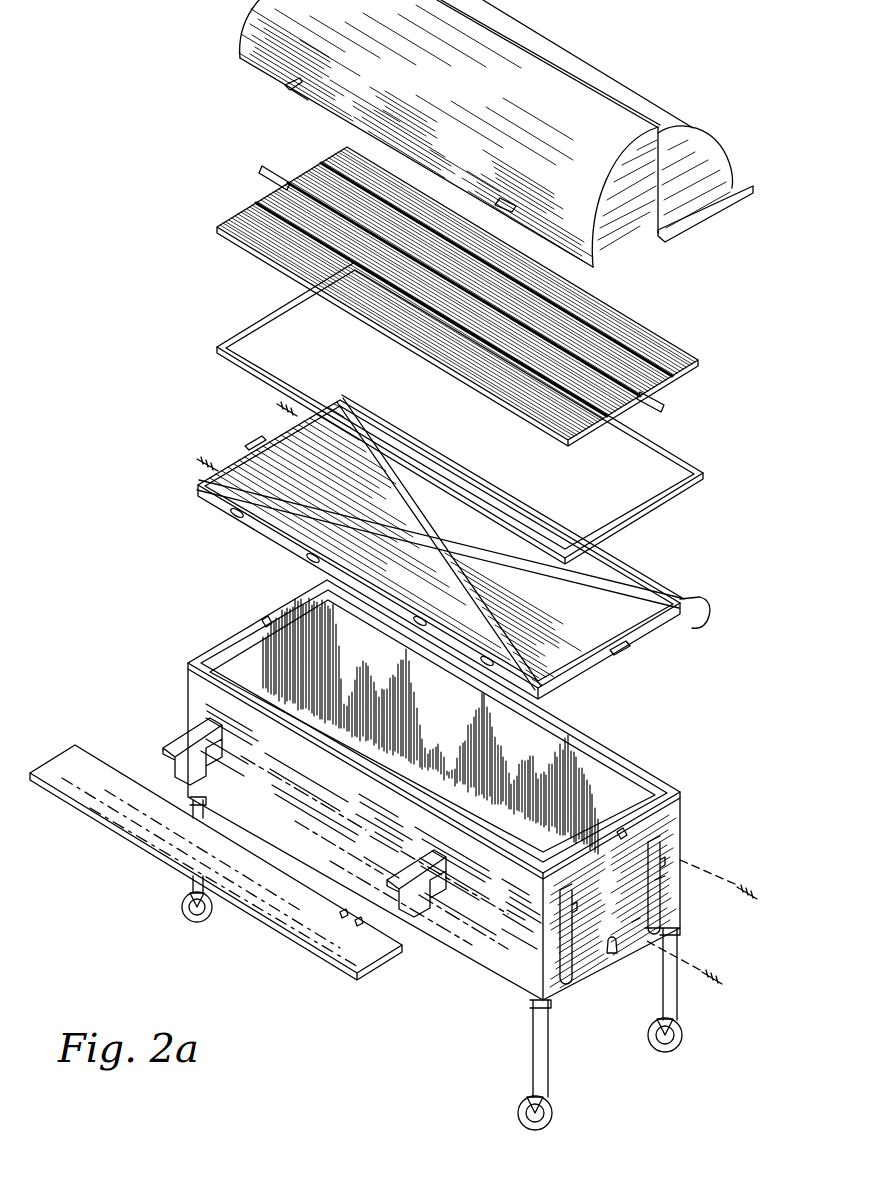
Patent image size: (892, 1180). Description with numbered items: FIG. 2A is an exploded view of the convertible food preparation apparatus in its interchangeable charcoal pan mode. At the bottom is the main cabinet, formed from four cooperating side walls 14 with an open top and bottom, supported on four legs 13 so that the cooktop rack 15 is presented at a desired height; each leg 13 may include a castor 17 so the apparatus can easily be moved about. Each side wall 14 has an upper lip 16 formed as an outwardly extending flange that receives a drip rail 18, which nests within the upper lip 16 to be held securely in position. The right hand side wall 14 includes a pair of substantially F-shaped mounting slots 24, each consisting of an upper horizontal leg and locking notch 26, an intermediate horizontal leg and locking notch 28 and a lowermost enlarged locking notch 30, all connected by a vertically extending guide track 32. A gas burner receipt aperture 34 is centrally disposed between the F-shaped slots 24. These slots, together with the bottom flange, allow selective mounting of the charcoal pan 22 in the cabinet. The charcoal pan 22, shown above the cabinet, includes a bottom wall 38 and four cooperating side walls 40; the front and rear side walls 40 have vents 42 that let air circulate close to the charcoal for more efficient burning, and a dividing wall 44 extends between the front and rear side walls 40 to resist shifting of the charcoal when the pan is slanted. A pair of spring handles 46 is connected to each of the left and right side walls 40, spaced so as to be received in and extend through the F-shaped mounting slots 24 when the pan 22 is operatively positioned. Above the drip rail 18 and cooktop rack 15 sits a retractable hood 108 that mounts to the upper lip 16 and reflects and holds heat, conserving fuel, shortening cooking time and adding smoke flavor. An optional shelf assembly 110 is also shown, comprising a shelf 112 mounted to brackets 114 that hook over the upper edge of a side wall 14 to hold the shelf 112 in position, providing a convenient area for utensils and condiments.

The retractable hood 108 is at (705, 165).
The cooktop rack 15 is at (660, 386).
The drip rail 18 is at (677, 491).
The bottom wall 38 is at (454, 707).
The dividing wall 44 is at (560, 567).
The side walls 40 is at (688, 601).
The vents 42 is at (618, 583).
The spring handles 46 is at (712, 986).
The side wall 14 is at (437, 855).
The upper lip 16 is at (662, 792).
The charcoal pan 22 is at (696, 636).
The upper horizontal leg and locking notch 26 is at (683, 813).
The F-shaped mounting slot 24 is at (680, 835).
The intermediate horizontal leg and locking notch 28 is at (678, 868).
The lowermost enlarged locking notch 30 is at (633, 922).
The guide track 32 is at (643, 932).
The gas burner receipt aperture 34 is at (612, 955).
The legs 13 is at (533, 1052).
The castor 17 is at (526, 1113).
The brackets 114 is at (420, 892).
The shelf 112 is at (301, 930).
The shelf assembly 110 is at (132, 745).